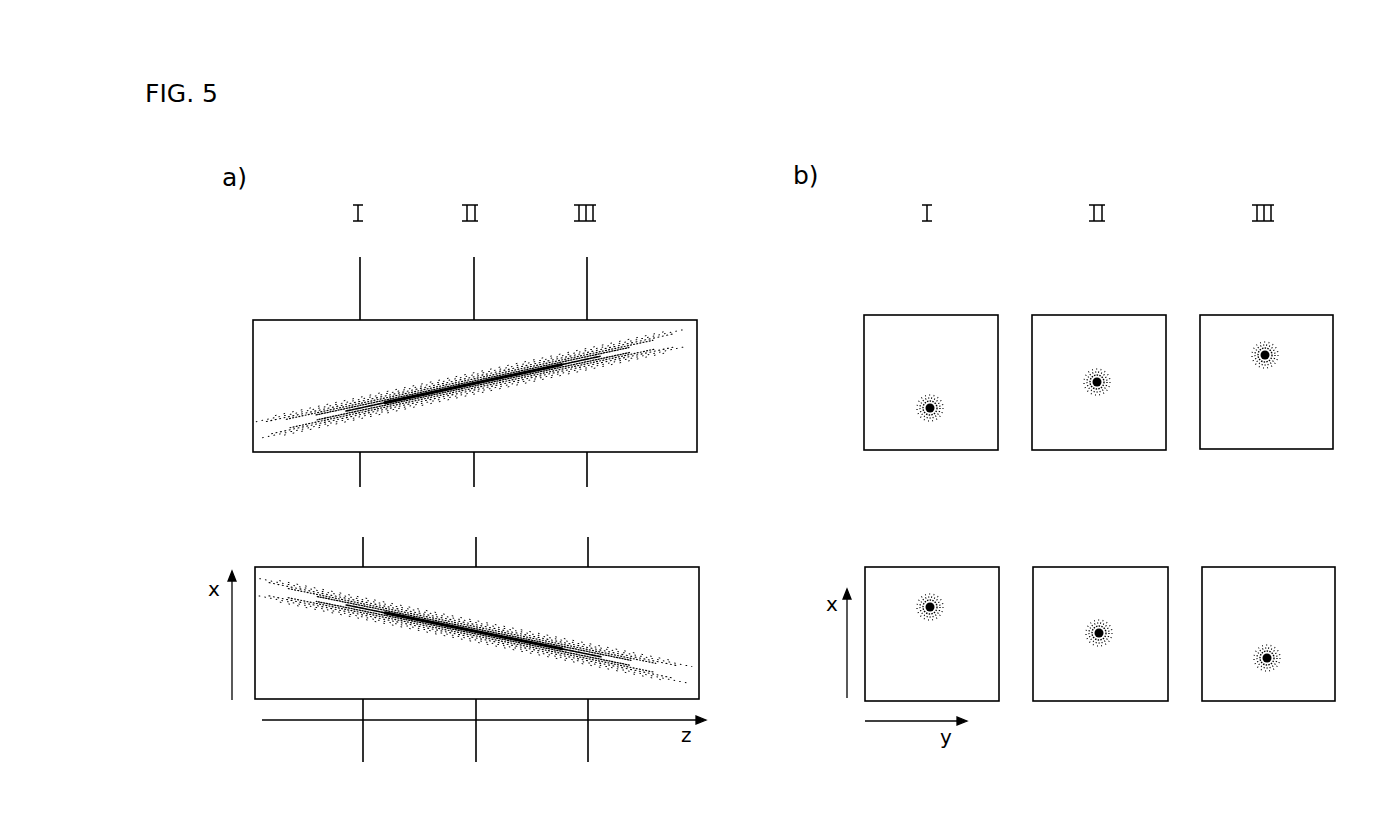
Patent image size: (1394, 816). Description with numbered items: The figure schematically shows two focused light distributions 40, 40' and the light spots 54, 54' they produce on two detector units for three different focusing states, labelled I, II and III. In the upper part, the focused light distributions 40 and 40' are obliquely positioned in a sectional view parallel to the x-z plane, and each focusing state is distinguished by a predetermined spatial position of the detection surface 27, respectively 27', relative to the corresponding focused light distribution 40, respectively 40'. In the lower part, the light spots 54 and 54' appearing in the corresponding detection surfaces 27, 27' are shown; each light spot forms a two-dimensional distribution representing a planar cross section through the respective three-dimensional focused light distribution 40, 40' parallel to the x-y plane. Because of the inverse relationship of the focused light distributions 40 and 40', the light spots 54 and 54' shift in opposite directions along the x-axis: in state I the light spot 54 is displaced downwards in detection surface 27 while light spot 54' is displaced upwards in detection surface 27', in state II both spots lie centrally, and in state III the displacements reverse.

The detection surface 27 is at (846, 390).
The detection surface 27' is at (849, 656).
The focused light distribution 40 is at (507, 384).
The focused light distribution 40' is at (510, 631).
The light spot 54 is at (1110, 344).
The light spot 54' is at (1124, 591).